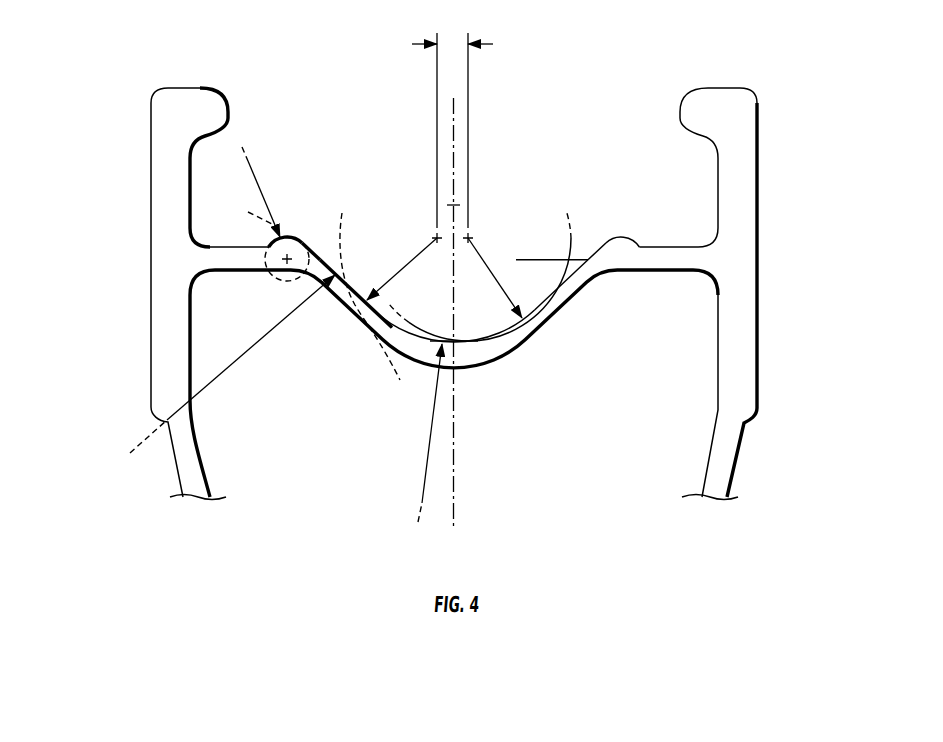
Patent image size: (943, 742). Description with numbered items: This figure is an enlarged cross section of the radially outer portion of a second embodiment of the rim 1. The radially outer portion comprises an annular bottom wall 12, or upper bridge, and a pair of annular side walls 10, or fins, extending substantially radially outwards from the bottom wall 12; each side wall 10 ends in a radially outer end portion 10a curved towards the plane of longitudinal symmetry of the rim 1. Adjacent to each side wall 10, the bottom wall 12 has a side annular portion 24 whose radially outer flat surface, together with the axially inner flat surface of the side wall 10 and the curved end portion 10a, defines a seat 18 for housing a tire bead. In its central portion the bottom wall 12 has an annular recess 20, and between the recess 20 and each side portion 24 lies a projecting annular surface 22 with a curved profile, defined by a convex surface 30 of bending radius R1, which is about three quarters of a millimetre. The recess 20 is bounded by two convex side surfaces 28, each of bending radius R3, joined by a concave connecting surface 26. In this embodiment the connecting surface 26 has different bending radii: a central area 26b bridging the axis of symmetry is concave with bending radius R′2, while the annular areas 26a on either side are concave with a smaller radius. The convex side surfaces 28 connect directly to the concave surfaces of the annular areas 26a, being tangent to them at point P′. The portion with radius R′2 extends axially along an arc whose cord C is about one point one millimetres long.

The rim 1 is at (154, 90).
The annular side wall 10 is at (464, 265).
The radially outer end portion 10a is at (212, 103).
The annular bottom wall 12 is at (518, 360).
The seat 18 is at (247, 143).
The annular recess 20 is at (525, 218).
The projecting annular surface 22 is at (318, 157).
The side annular portion 24 is at (210, 247).
The concave connecting surface 26 is at (407, 210).
The annular area 26a is at (541, 298).
The central area 26b is at (500, 335).
The convex side surface 28 is at (303, 243).
The convex surface 30 is at (300, 242).
The bending radius of the convex surface R1 is at (261, 192).
The bending radius of the convex side surfaces R3 is at (232, 364).
The bending radius of the central area R′2 is at (414, 433).
The tangent point P′ is at (366, 280).
The cord C is at (452, 121).